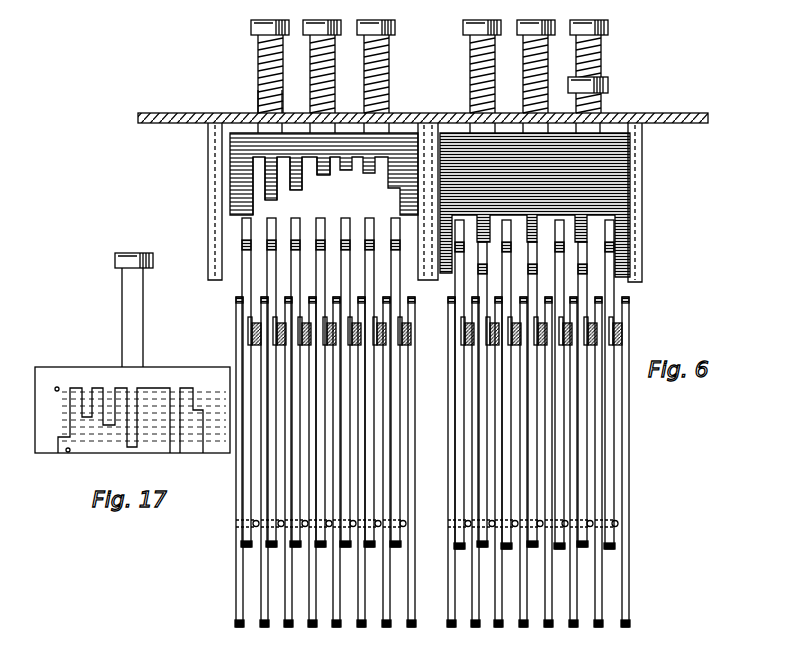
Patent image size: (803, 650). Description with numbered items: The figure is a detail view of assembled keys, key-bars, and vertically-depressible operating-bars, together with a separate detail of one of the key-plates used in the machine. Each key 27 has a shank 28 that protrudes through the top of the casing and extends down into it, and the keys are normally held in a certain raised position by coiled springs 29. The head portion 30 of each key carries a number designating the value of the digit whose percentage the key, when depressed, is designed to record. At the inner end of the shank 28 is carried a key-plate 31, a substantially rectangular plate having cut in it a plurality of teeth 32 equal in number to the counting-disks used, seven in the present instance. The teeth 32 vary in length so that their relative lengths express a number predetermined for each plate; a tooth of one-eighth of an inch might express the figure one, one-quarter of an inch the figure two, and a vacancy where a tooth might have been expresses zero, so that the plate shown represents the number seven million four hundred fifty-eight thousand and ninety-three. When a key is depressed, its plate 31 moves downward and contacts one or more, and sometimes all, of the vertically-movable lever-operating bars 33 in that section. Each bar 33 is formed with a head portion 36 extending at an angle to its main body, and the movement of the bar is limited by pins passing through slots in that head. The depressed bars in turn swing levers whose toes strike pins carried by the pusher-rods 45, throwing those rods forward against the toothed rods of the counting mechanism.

In FIG. 6, the key 27 is at (283, 46).
In FIG. 6, the shank 28 is at (258, 97).
In FIG. 17, the shank 28 is at (143, 307).
In FIG. 6, the coiled spring 29 is at (258, 46).
In FIG. 6, the head portion 30 is at (251, 26).
In FIG. 17, the head portion 30 is at (155, 262).
In FIG. 6, the key-plate 31 is at (230, 147).
In FIG. 17, the key-plate 31 is at (158, 374).
In FIG. 6, the teeth 32 is at (277, 202).
In FIG. 17, the teeth 32 is at (95, 392).
In FIG. 6, the lever-operating bar 33 is at (268, 285).
In FIG. 6, the head portion 36 is at (277, 226).
In FIG. 6, the pusher-rod 45 is at (252, 328).